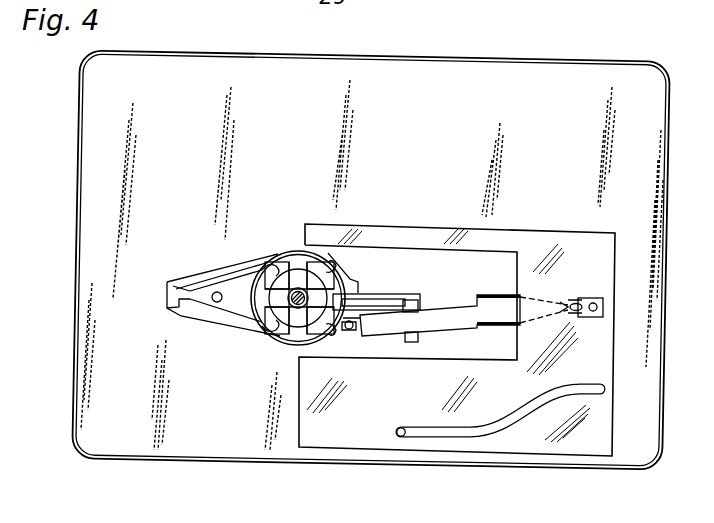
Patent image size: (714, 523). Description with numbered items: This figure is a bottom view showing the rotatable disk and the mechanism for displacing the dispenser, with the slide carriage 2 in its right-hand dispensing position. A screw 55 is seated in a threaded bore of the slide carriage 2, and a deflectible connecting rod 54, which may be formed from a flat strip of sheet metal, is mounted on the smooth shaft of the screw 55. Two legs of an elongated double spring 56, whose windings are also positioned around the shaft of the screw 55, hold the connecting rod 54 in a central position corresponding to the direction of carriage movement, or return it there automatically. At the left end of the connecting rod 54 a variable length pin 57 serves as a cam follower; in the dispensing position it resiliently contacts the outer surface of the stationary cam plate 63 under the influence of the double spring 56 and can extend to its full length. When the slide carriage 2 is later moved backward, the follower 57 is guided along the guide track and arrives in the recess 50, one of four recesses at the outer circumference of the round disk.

The slide carriage 2 is at (525, 437).
The recess 50 is at (280, 337).
The connecting rod 54 is at (443, 317).
The screw 55 is at (593, 302).
The elongated double spring 56 is at (582, 316).
The variable length pin 57 is at (355, 328).
The cam plate 63 is at (237, 335).